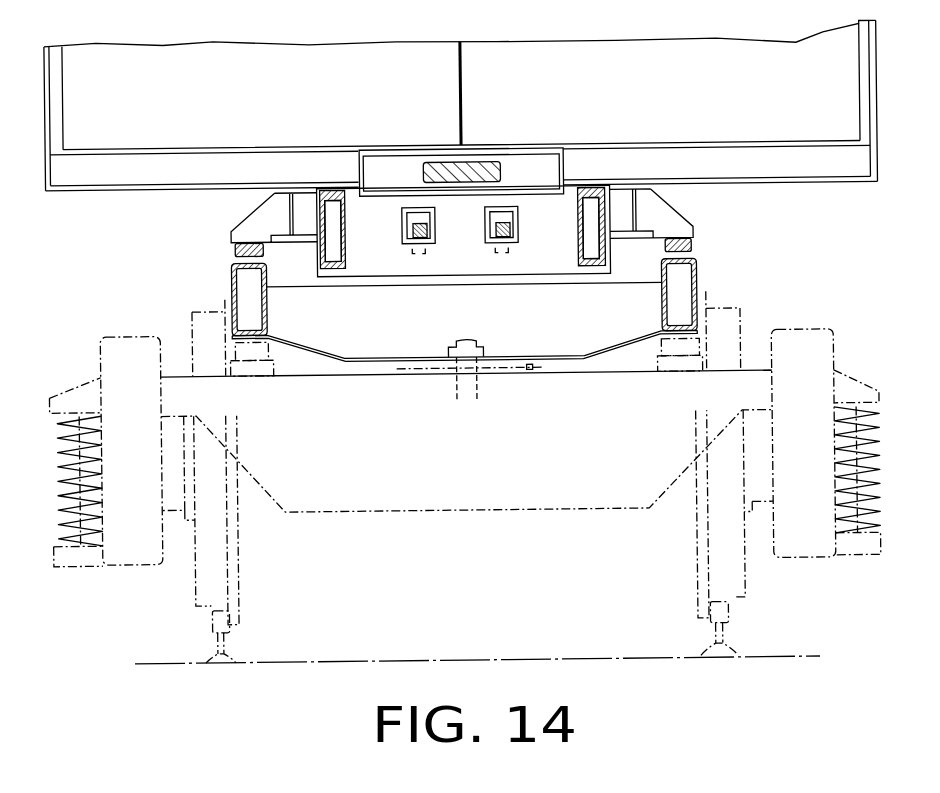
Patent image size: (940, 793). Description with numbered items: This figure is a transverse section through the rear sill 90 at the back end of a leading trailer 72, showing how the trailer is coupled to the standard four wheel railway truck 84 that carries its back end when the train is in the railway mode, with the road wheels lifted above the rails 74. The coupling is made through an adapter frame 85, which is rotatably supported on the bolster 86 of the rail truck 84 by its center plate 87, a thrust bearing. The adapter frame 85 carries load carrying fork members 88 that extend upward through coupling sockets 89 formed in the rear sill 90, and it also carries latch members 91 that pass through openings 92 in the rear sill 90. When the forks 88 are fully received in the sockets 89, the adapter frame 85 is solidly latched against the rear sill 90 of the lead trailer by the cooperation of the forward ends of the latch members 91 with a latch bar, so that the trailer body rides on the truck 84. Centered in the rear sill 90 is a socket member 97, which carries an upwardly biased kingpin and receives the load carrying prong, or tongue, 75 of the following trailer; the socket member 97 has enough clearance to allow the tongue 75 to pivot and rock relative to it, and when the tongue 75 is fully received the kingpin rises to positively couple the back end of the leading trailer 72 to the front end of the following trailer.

The trailer 72 is at (833, 104).
The rail 74 is at (727, 617).
The load carrying prong 75 is at (441, 163).
The railway truck 84 is at (806, 328).
The adapter frame 85 is at (365, 363).
The bolster 86 is at (378, 513).
The center plate 87 is at (437, 378).
The load carrying fork member 88 is at (340, 240).
The coupling socket 89 is at (345, 212).
The rear sill 90 is at (580, 155).
The latch member 91 is at (409, 228).
The opening 92 is at (493, 218).
The socket member 97 is at (387, 147).